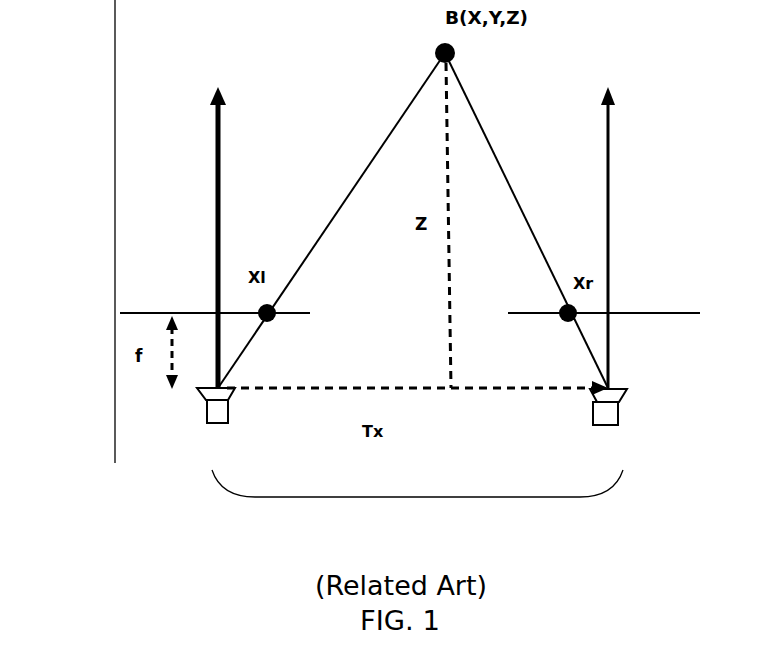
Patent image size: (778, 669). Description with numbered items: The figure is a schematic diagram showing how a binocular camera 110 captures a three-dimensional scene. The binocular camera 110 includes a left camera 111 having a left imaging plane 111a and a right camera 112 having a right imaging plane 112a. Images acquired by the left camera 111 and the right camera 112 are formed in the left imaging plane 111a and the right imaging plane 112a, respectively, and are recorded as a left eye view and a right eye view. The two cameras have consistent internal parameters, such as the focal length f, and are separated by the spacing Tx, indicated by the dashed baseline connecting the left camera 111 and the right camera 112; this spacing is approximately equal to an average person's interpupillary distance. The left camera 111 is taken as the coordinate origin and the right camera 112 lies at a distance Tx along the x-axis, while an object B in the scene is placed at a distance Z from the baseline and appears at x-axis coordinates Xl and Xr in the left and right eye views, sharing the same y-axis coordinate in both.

The binocular camera 110 is at (418, 497).
The left camera 111 is at (203, 413).
The right camera 112 is at (622, 413).
The left imaging plane 111a is at (132, 313).
The right imaging plane 112a is at (670, 313).